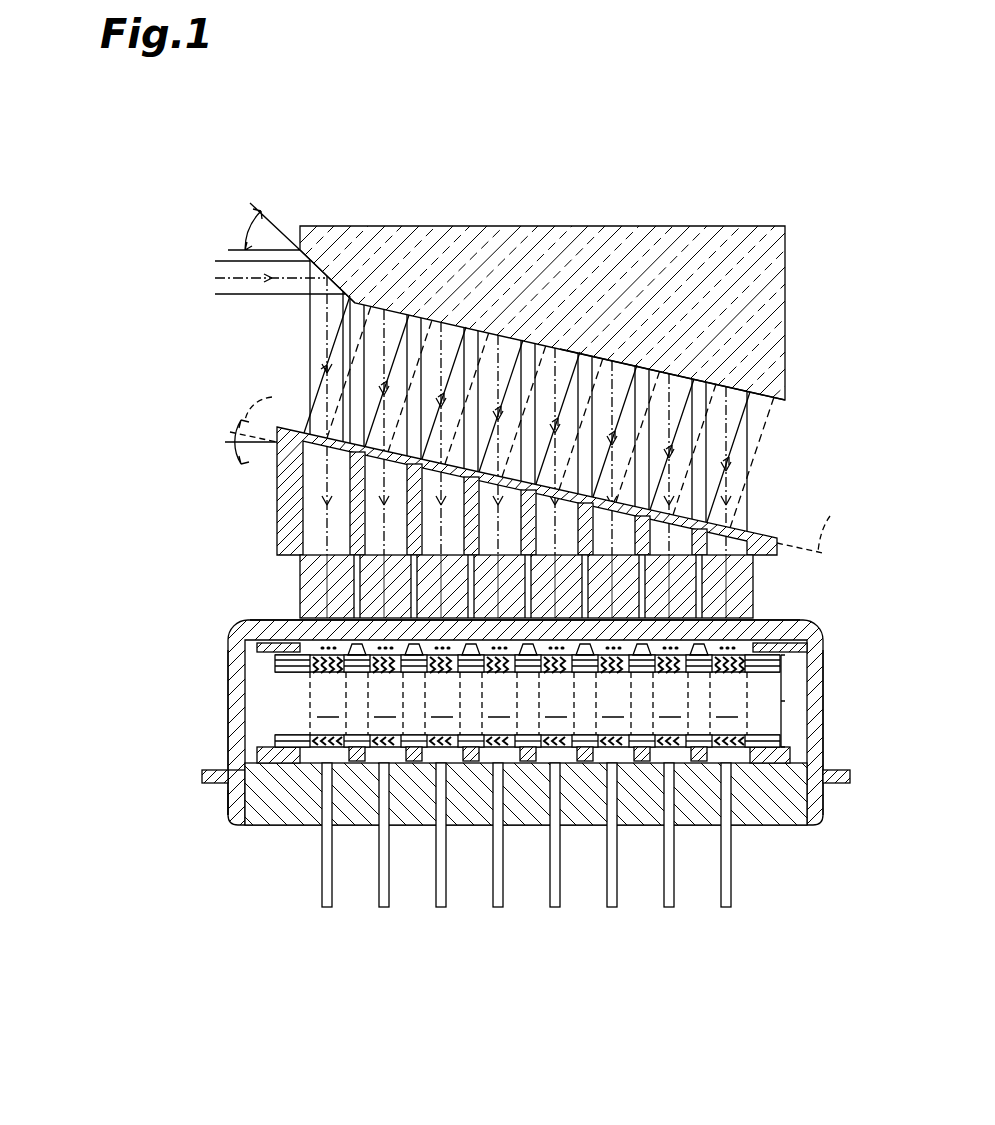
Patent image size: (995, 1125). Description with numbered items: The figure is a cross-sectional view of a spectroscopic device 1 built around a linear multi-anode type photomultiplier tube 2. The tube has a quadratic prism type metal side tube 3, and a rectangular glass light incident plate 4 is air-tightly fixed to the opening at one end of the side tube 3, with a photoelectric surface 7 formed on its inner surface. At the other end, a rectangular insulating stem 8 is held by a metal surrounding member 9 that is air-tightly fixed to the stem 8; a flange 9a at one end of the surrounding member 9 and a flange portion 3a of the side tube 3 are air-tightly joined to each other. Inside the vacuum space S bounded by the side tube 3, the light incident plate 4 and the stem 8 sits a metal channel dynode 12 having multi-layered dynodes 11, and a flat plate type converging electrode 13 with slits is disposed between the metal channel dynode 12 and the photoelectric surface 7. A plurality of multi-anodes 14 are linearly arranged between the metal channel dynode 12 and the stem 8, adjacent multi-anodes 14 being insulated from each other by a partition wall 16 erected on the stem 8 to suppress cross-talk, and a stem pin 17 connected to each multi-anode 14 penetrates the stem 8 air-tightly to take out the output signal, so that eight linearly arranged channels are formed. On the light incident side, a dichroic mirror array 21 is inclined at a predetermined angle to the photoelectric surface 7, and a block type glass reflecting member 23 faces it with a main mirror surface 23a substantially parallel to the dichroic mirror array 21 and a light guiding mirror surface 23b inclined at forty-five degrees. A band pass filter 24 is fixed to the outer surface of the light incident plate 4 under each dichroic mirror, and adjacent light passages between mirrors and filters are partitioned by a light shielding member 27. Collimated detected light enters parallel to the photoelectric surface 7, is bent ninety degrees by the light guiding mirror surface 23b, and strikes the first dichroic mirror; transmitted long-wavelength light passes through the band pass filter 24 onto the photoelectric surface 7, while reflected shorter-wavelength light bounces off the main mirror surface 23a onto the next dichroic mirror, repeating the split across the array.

The spectroscopic device 1 is at (641, 191).
The photomultiplier tube 2 is at (232, 644).
The side tube 3 is at (228, 700).
The flange portion 3a is at (215, 772).
The light incident plate 4 is at (790, 624).
The photoelectric surface 7 is at (800, 648).
The stem 8 is at (287, 815).
The surrounding member 9 is at (233, 815).
The flange 9a is at (215, 783).
The dynodes 11 is at (278, 664).
The metal channel dynode 12 is at (562, 701).
The converging electrode 13 is at (823, 692).
The multi-anodes 14 is at (412, 762).
The partition wall 16 is at (355, 762).
The stem pin 17 is at (322, 900).
The dichroic mirror array 21 is at (748, 540).
The reflecting member 23 is at (786, 300).
The main mirror surface 23a is at (766, 398).
The light guiding mirror surface 23b is at (340, 296).
The band pass filter 24 is at (302, 592).
The light shielding member 27 is at (352, 527).
The vacuum space S is at (803, 735).